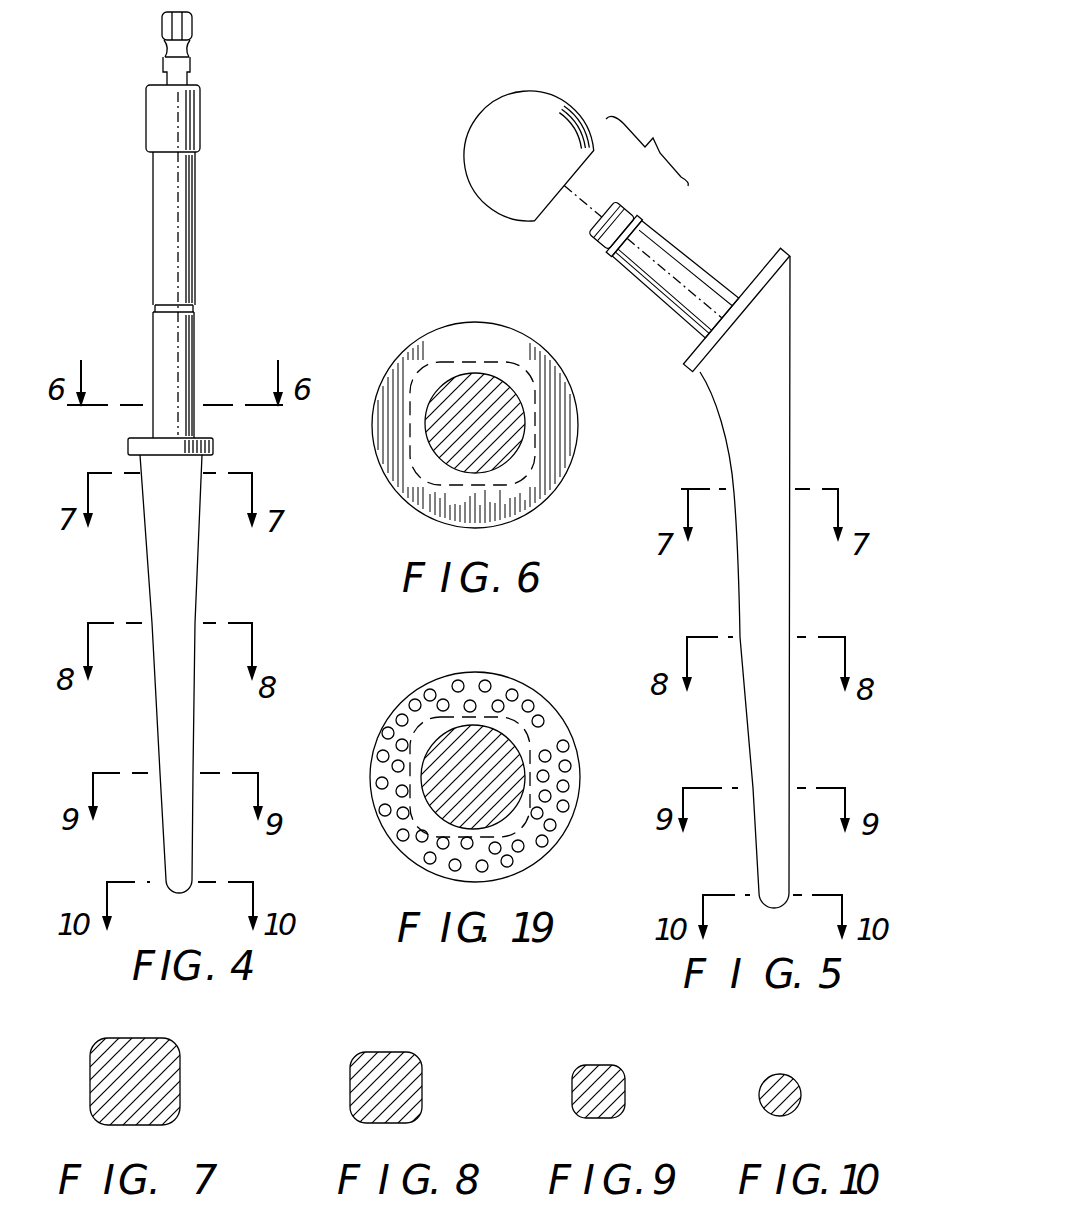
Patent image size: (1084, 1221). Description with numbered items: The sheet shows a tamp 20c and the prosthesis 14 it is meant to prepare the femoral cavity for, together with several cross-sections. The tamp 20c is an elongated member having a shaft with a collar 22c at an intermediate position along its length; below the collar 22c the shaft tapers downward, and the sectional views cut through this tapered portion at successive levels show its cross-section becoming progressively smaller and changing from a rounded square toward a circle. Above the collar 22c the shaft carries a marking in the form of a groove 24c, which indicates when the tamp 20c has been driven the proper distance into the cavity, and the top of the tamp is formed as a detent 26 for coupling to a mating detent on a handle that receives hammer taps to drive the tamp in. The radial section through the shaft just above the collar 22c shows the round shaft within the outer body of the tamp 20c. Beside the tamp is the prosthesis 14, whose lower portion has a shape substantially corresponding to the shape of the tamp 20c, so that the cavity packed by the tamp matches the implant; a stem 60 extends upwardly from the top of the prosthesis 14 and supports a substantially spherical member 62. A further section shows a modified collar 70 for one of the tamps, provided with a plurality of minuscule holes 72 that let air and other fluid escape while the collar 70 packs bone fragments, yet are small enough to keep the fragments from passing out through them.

In FIG. 5, the prosthesis 14 is at (774, 426).
In FIG. 4, the tamp 20c is at (224, 674).
In FIG. 6, the tamp 20c is at (433, 318).
In FIG. 4, the collar 22c is at (213, 447).
In FIG. 6, the collar 22c is at (515, 347).
In FIG. 4, the groove 24c is at (172, 240).
In FIG. 4, the detent 26 is at (190, 50).
In FIG. 5, the stem 60 is at (688, 282).
In FIG. 5, the spherical member 62 is at (543, 134).
In FIG. 19, the modified collar 70 is at (572, 732).
In FIG. 19, the holes 72 is at (487, 682).